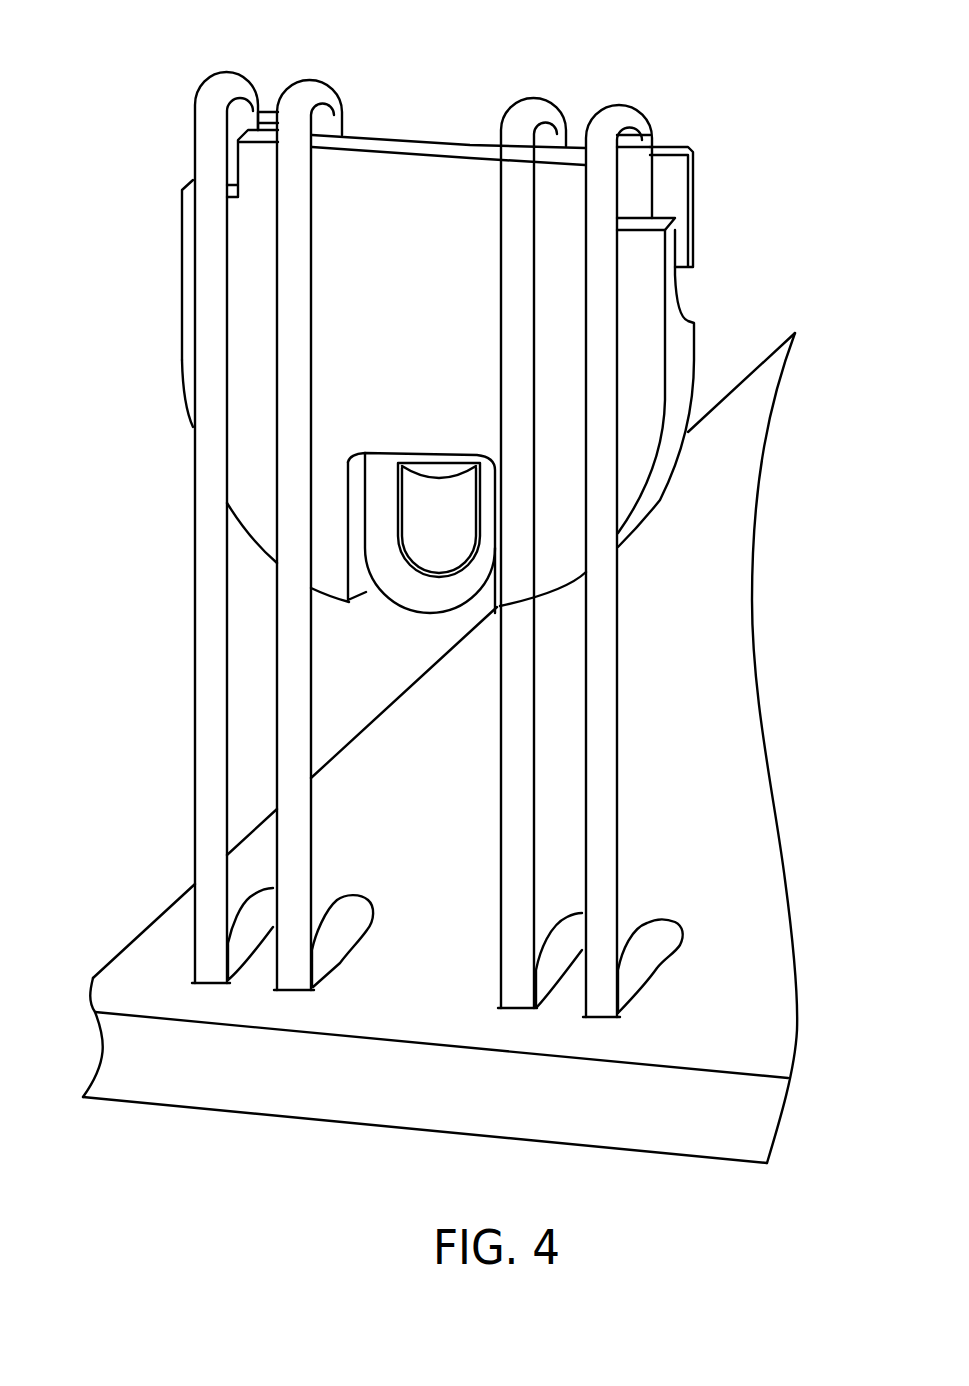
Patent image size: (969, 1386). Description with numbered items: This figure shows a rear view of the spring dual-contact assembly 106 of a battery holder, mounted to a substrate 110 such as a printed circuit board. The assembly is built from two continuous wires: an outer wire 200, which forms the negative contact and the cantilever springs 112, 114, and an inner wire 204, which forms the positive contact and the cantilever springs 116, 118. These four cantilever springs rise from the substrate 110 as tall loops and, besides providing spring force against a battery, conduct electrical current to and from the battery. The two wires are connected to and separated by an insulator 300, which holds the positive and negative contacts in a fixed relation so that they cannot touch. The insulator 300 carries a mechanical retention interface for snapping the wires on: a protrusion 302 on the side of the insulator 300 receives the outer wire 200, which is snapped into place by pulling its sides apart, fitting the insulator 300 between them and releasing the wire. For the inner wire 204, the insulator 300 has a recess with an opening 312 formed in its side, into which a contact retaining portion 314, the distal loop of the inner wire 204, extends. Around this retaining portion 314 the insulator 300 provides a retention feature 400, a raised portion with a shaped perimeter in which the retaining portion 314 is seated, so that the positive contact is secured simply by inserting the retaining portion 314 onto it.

The spring dual-contact assembly 106 is at (466, 78).
The substrate 110 is at (745, 722).
The cantilever spring 112 is at (625, 102).
The cantilever spring 114 is at (228, 72).
The cantilever spring 116 is at (538, 97).
The cantilever spring 118 is at (314, 80).
The outer wire 200 is at (178, 732).
The inner wire 204 is at (262, 629).
The insulator 300 is at (426, 313).
The protrusion 302 is at (673, 202).
The opening 312 is at (440, 475).
The contact retaining portion 314 is at (413, 583).
The retention feature 400 is at (410, 488).